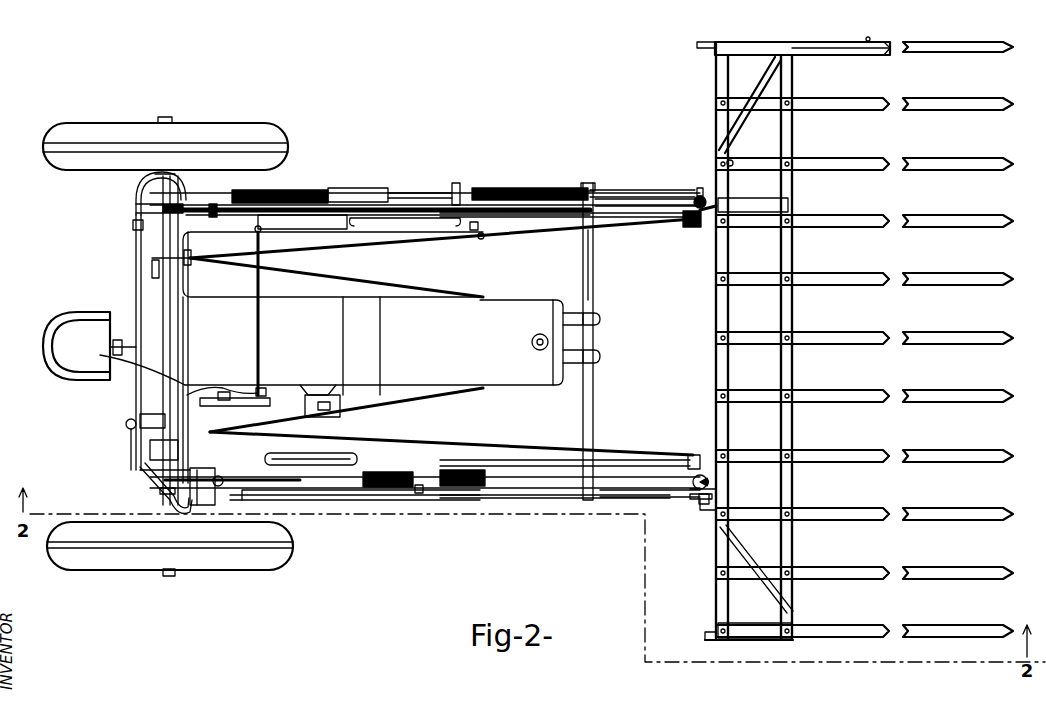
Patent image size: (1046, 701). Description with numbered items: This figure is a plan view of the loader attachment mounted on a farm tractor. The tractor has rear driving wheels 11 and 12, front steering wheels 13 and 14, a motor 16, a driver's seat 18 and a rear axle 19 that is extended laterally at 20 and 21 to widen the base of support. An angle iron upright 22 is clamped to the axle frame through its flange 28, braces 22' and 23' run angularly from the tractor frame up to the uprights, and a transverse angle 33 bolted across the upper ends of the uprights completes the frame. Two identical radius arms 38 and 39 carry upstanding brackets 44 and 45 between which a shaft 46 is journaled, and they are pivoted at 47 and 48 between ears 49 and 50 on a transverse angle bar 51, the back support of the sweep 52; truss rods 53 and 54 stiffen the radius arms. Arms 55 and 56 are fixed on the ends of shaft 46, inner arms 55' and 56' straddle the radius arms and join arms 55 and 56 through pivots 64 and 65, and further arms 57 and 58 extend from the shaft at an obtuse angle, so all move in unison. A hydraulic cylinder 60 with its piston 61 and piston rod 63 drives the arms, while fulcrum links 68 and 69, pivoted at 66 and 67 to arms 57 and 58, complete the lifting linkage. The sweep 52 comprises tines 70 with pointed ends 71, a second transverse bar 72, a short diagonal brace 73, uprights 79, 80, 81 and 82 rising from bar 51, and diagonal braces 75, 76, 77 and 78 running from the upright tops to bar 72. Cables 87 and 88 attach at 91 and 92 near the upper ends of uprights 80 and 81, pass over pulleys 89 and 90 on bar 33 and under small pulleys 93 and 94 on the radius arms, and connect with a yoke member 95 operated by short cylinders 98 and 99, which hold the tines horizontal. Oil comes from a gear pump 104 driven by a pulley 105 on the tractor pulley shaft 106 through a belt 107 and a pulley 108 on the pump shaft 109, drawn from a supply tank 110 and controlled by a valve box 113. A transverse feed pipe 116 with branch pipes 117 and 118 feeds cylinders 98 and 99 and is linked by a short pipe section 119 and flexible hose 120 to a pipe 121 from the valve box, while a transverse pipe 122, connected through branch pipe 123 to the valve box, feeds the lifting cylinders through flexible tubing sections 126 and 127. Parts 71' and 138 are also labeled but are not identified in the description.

The rear driving wheel 11 is at (125, 572).
The rear driving wheel 12 is at (98, 135).
The front steering wheel 13 is at (600, 318).
The front steering wheel 14 is at (600, 362).
The motor 16 is at (505, 300).
The driver's seat 18 is at (45, 332).
The rear axle 19 is at (153, 176).
The axle extension 20 is at (210, 487).
The axle extension 21 is at (197, 168).
The upright 22 is at (333, 264).
The brace 22' is at (336, 277).
The brace 23' is at (346, 410).
The flange 28 is at (151, 275).
The transverse angle 33 is at (182, 339).
The radius arm 38 is at (704, 498).
The radius arm 39 is at (672, 198).
The upstanding bracket 44 is at (590, 497).
The upstanding bracket 45 is at (588, 186).
The shaft 46 is at (594, 248).
The pivot 47 is at (718, 500).
The pivot 48 is at (707, 195).
The ears 49 is at (730, 208).
The ears 50 is at (738, 160).
The transverse angle bar 51 is at (729, 312).
The sweep 52 is at (814, 32).
The truss rod 53 is at (665, 498).
The truss rod 54 is at (618, 190).
The arm 55 is at (486, 505).
The arm 55' is at (451, 437).
The arm 56 is at (530, 174).
The arm 56' is at (441, 238).
The arm 57 is at (612, 461).
The arm 58 is at (650, 212).
The hydraulic cylinder 60 is at (360, 193).
The piston 61 is at (270, 193).
The piston rod 63 is at (420, 195).
The pivot 64 is at (458, 499).
The pivot 65 is at (455, 184).
The pivot 66 is at (688, 460).
The pivot 67 is at (690, 228).
The fulcrum link 68 is at (418, 491).
The fulcrum link 69 is at (483, 240).
The tines 70 is at (838, 98).
The pointed ends 71 is at (958, 339).
The anchor 71' is at (189, 242).
The second transverse bar 72 is at (794, 365).
The short diagonal brace 73 is at (742, 548).
The diagonal brace 75 is at (735, 45).
The diagonal brace 76 is at (746, 104).
The diagonal brace 77 is at (745, 462).
The diagonal brace 78 is at (738, 632).
The upright 79 is at (704, 630).
The upright 80 is at (703, 474).
The upright 81 is at (712, 212).
The upright 82 is at (706, 50).
The cable 87 is at (240, 480).
The cable 88 is at (259, 228).
The pulley 89 is at (163, 493).
The pulley 90 is at (162, 209).
The cable connection 91 is at (703, 506).
The cable connection 92 is at (699, 188).
The small pulley 93 is at (218, 499).
The small pulley 94 is at (214, 220).
The yoke member 95 is at (472, 229).
The short cylinder 98 is at (405, 473).
The short cylinder 99 is at (394, 218).
The gear pump 104 is at (265, 460).
The pulley 105 is at (340, 415).
The pulley shaft 106 is at (335, 392).
The belt 107 is at (270, 400).
The pulley 108 is at (216, 392).
The gear pump shaft 109 is at (305, 455).
The supply tank 110 is at (198, 472).
The valve box 113 is at (150, 446).
The transverse feed pipe 116 is at (262, 323).
The branch pipe 117 is at (305, 500).
The branch pipe 118 is at (285, 230).
The short pipe section 119 is at (262, 390).
The flexible hose 120 is at (223, 394).
The pipe 121 is at (100, 355).
The transverse pipe 122 is at (135, 250).
The branch pipe 123 is at (140, 418).
The flexible tubing section 126 is at (148, 478).
The flexible tubing section 127 is at (146, 194).
The knob 138 is at (125, 421).